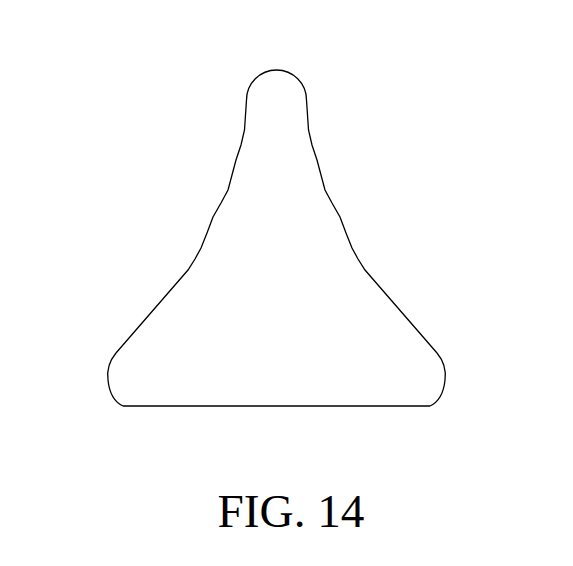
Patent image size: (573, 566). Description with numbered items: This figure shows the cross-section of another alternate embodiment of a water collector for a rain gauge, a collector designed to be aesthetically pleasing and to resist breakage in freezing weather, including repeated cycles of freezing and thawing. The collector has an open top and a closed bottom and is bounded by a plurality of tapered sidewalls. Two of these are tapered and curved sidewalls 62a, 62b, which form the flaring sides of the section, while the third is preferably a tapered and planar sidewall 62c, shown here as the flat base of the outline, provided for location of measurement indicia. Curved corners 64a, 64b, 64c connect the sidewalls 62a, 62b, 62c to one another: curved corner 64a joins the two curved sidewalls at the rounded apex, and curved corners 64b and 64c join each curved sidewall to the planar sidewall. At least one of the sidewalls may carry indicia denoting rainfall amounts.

The tapered and curved sidewall 62a is at (352, 248).
The tapered and curved sidewall 62b is at (200, 250).
The tapered and planar sidewall 62c is at (260, 407).
The curved corner 64a is at (272, 69).
The curved corner 64b is at (108, 386).
The curved corner 64c is at (445, 378).